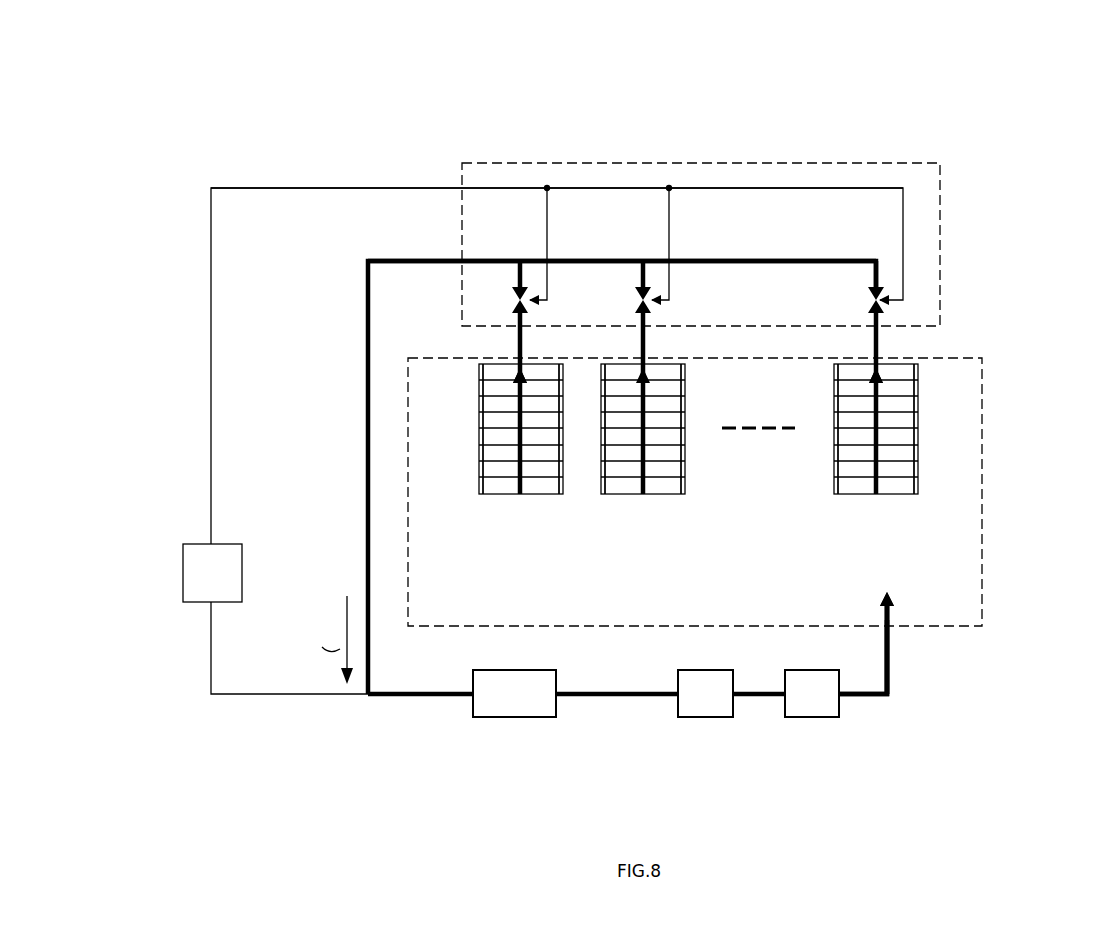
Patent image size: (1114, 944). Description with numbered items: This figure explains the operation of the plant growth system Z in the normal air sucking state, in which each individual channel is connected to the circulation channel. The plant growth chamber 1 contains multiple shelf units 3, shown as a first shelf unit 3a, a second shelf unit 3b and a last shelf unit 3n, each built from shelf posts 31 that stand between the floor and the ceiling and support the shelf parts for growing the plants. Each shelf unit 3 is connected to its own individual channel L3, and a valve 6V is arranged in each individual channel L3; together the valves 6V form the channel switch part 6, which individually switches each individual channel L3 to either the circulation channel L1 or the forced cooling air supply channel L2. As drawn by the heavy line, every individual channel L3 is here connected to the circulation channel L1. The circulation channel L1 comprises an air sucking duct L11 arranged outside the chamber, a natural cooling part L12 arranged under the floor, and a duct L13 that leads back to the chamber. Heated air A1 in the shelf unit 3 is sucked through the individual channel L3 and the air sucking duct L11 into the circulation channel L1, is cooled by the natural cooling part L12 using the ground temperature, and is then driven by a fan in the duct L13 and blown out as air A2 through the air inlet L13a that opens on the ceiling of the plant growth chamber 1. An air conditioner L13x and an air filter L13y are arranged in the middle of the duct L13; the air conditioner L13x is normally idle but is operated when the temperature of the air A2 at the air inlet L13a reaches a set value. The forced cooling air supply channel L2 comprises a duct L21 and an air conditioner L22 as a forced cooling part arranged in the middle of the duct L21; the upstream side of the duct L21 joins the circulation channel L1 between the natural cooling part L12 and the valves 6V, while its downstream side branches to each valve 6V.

The plant growth system Z is at (272, 85).
The plant growth chamber 1 is at (985, 487).
The shelf unit 3 is at (490, 498).
The shelf unit 3a is at (515, 498).
The shelf unit 3b is at (638, 498).
The shelf unit 3n is at (871, 498).
The shelf post 31 is at (480, 477).
The channel switch part 6 is at (787, 160).
The valve 6V is at (508, 312).
The circulation channel L1 is at (330, 485).
The air sucking duct L11 is at (385, 258).
The natural cooling part L12 is at (512, 720).
The duct L13 is at (892, 698).
The air inlet L13a is at (880, 612).
The air conditioner L13x is at (705, 720).
The air filter L13y is at (810, 720).
The forced cooling air supply channel L2 is at (172, 435).
The duct L21 is at (260, 186).
The air conditioner L22 is at (196, 542).
The individual channel L3 is at (525, 346).
The air A1 is at (520, 388).
The air A2 is at (882, 610).